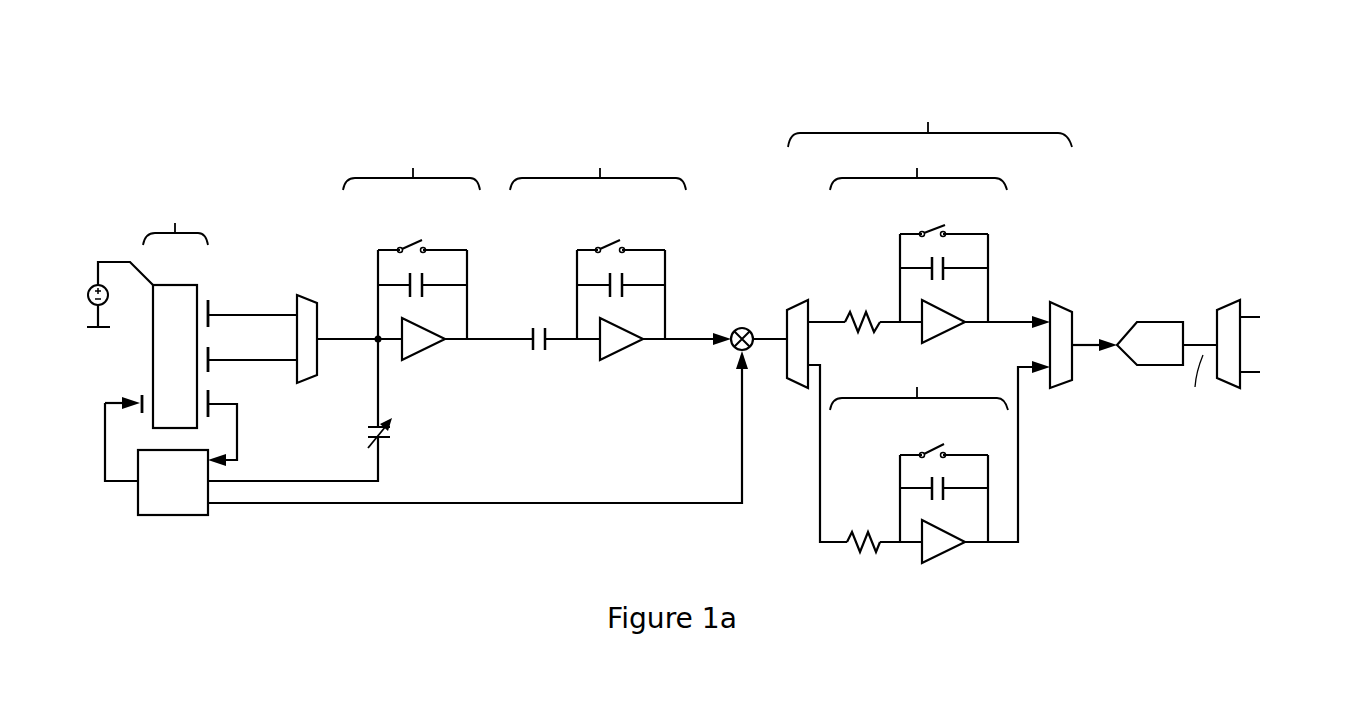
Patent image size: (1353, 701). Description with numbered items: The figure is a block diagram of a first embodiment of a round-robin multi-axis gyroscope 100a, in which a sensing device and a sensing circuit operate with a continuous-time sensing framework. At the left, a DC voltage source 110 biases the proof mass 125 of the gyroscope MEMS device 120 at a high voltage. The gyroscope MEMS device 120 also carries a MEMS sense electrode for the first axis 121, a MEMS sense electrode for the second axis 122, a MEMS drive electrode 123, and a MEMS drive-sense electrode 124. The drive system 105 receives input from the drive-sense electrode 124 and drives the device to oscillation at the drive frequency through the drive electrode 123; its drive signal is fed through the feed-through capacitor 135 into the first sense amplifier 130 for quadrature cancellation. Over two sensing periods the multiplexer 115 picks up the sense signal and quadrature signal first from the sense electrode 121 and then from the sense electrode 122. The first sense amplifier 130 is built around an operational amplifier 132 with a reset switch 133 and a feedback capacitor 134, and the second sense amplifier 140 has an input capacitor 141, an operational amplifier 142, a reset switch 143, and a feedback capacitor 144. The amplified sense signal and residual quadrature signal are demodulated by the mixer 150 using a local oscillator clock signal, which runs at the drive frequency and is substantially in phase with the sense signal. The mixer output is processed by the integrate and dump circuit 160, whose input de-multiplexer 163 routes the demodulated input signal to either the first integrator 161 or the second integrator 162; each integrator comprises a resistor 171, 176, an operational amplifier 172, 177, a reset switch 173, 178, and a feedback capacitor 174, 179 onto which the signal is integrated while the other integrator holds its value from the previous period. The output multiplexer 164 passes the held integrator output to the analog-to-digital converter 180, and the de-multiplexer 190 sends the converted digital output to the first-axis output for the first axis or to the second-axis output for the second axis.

The round-robin multi-axis gyroscope 100a is at (732, 80).
The drive system 105 is at (175, 522).
The DC voltage source 110 is at (87, 280).
The multiplexer 115 is at (307, 292).
The gyroscope MEMS device 120 is at (175, 223).
The MEMS sense electrode for the first axis 121 is at (215, 305).
The MEMS sense electrode for the second axis 122 is at (215, 350).
The MEMS drive electrode 123 is at (130, 397).
The MEMS drive-sense electrode 124 is at (215, 400).
The proof mass 125 is at (148, 370).
The first sense amplifier 130 is at (438, 284).
The operational amplifier 132 is at (422, 358).
The reset switch 133 is at (420, 240).
The feedback capacitor 134 is at (423, 293).
The feed-through capacitor 135 is at (367, 427).
The second sense amplifier 140 is at (620, 278).
The input capacitor 141 is at (538, 317).
The operational amplifier 142 is at (622, 360).
The reset switch 143 is at (612, 238).
The feedback capacitor 144 is at (620, 293).
The mixer 150 is at (741, 326).
The integrate and dump circuit 160 is at (952, 346).
The first integrator 161 is at (937, 258).
The second integrator 162 is at (940, 475).
The input de-multiplexer 163 is at (790, 298).
The output multiplexer 164 is at (1062, 298).
The resistor 171 is at (863, 302).
The operational amplifier 172 is at (948, 333).
The reset switch 173 is at (932, 227).
The feedback capacitor 174 is at (943, 280).
The resistor 176 is at (863, 528).
The operational amplifier 177 is at (952, 557).
The reset switch 178 is at (935, 440).
The feedback capacitor 179 is at (943, 502).
The analog-to-digital converter 180 is at (1162, 317).
The de-multiplexer 190 is at (1228, 297).